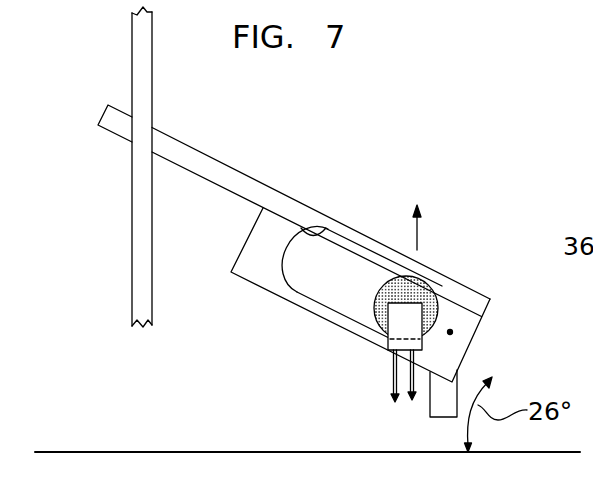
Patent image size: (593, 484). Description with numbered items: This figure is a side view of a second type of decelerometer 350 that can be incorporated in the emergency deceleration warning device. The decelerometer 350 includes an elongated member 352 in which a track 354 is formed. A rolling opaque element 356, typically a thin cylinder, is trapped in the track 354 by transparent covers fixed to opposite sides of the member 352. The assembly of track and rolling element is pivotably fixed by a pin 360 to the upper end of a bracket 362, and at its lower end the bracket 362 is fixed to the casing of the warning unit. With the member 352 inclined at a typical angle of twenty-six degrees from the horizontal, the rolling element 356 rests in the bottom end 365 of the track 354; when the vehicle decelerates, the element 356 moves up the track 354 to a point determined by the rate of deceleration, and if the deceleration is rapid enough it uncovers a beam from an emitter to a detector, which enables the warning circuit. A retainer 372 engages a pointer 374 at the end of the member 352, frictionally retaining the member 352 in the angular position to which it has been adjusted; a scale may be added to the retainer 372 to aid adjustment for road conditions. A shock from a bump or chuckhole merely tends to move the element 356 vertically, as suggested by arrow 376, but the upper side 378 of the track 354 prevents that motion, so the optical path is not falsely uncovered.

The decelerometer 350 is at (395, 291).
The elongated member 352 is at (500, 314).
The track 354 is at (282, 286).
The rolling opaque element 356 is at (428, 288).
The pin 360 is at (452, 332).
The bracket 362 is at (430, 408).
The bottom end of track 365 is at (452, 294).
The retainer 372 is at (132, 62).
The pointer 374 is at (103, 115).
The arrow 376 is at (427, 213).
The upper side of track 378 is at (301, 228).